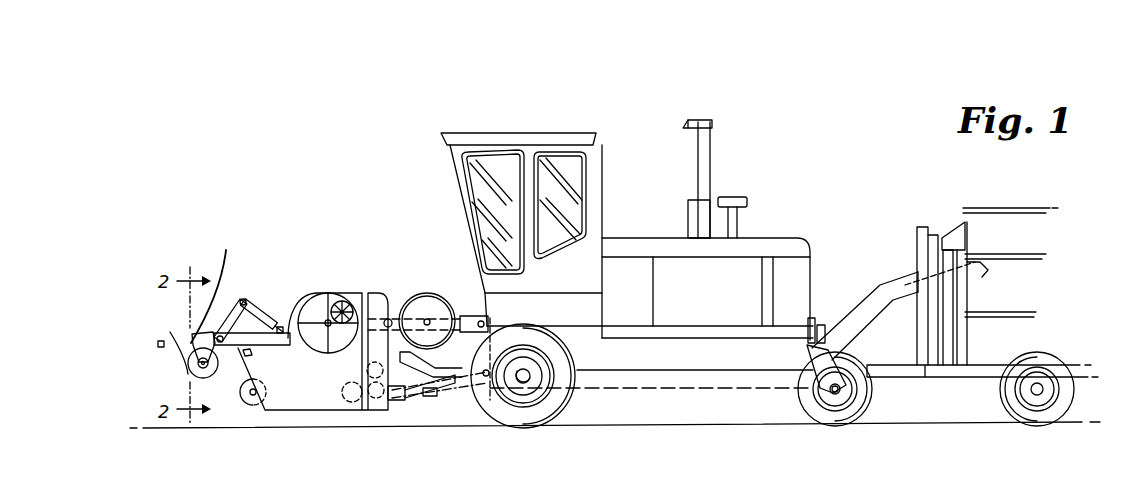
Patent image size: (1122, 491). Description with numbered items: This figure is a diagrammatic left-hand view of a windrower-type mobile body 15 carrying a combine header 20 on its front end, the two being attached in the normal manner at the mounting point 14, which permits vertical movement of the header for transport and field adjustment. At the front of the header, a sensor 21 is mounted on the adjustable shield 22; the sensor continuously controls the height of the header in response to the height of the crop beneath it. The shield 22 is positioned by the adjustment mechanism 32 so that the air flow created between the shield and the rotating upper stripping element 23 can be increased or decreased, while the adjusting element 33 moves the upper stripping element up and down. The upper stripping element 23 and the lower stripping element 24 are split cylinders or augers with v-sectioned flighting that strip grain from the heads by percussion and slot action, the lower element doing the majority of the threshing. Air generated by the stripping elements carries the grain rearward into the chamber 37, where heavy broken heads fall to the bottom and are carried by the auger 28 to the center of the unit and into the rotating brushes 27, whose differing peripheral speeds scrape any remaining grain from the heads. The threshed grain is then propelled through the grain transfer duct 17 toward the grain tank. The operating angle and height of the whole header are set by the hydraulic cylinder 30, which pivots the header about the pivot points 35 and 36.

The mounting attachment point 14 is at (474, 311).
The mobile body 15 is at (798, 215).
The grain transfer duct 17 is at (888, 284).
The combine header 20 is at (330, 250).
The sensor 21 is at (158, 344).
The adjustable shield 22 is at (176, 368).
The upper stripping element 23 is at (197, 380).
The lower stripping element 24 is at (248, 405).
The rotating brushes 27 is at (396, 370).
The auger 28 is at (349, 404).
The hydraulic cylinder 30 is at (431, 399).
The adjustment mechanism 32 is at (219, 286).
The adjusting element 33 is at (282, 328).
The pivot point 35 is at (380, 405).
The pivot point 36 is at (390, 318).
The chamber 37 is at (305, 368).